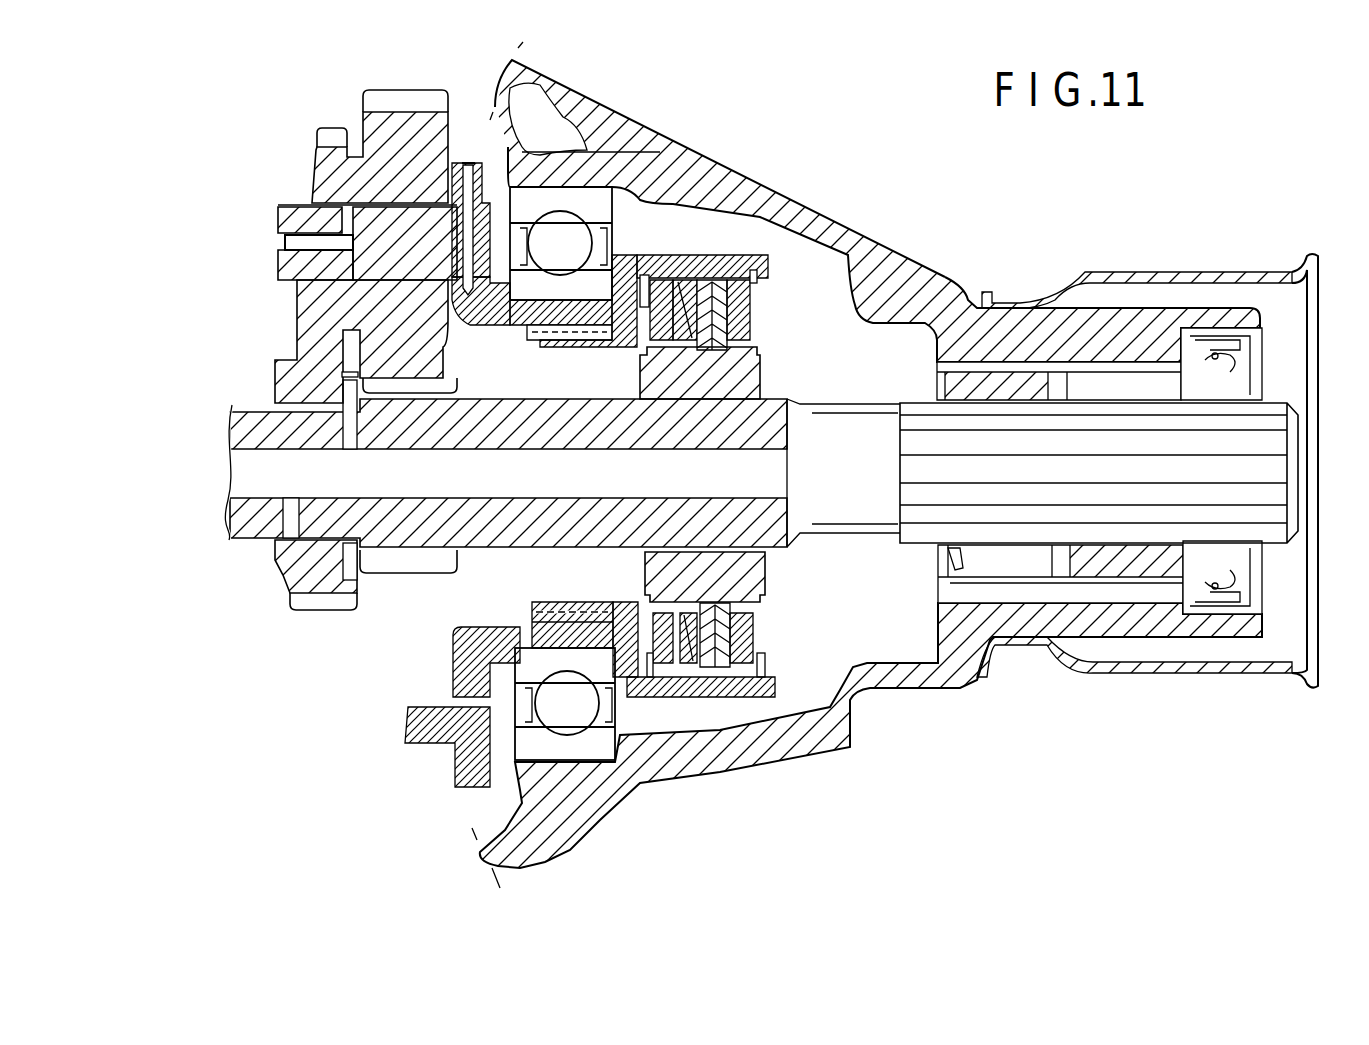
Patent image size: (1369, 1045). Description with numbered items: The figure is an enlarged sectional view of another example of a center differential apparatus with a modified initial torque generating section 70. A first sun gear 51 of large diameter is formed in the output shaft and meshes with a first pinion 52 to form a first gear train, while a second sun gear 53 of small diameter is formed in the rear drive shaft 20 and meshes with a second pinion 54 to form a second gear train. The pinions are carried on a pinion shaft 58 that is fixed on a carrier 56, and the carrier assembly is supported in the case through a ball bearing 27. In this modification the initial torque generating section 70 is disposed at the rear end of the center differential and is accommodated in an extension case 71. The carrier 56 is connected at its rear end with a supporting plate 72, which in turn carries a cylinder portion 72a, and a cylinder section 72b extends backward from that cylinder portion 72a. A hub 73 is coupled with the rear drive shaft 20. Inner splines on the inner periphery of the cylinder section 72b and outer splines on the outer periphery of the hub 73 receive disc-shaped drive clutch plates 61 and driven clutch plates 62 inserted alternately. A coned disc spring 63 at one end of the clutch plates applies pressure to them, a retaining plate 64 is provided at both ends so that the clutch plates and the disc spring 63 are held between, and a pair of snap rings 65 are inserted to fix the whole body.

The rear drive shaft 20 is at (860, 525).
The ball bearing 27 is at (597, 200).
The first sun gear 51 is at (318, 605).
The first pinion 52 is at (329, 138).
The second sun gear 53 is at (403, 570).
The second pinion 54 is at (400, 105).
The carrier 56 is at (417, 747).
The pinion shaft 58 is at (283, 220).
The drive clutch plates 61 is at (727, 257).
The driven clutch plates 62 is at (713, 670).
The coned disc spring 63 is at (693, 667).
The retaining plate 64 is at (666, 665).
The snap rings 65 is at (655, 680).
The initial torque generating section 70 is at (797, 298).
The extension case 71 is at (812, 210).
The supporting plate 72 is at (463, 675).
The cylinder portion 72a is at (540, 640).
The cylinder section 72b is at (670, 260).
The hub 73 is at (762, 367).